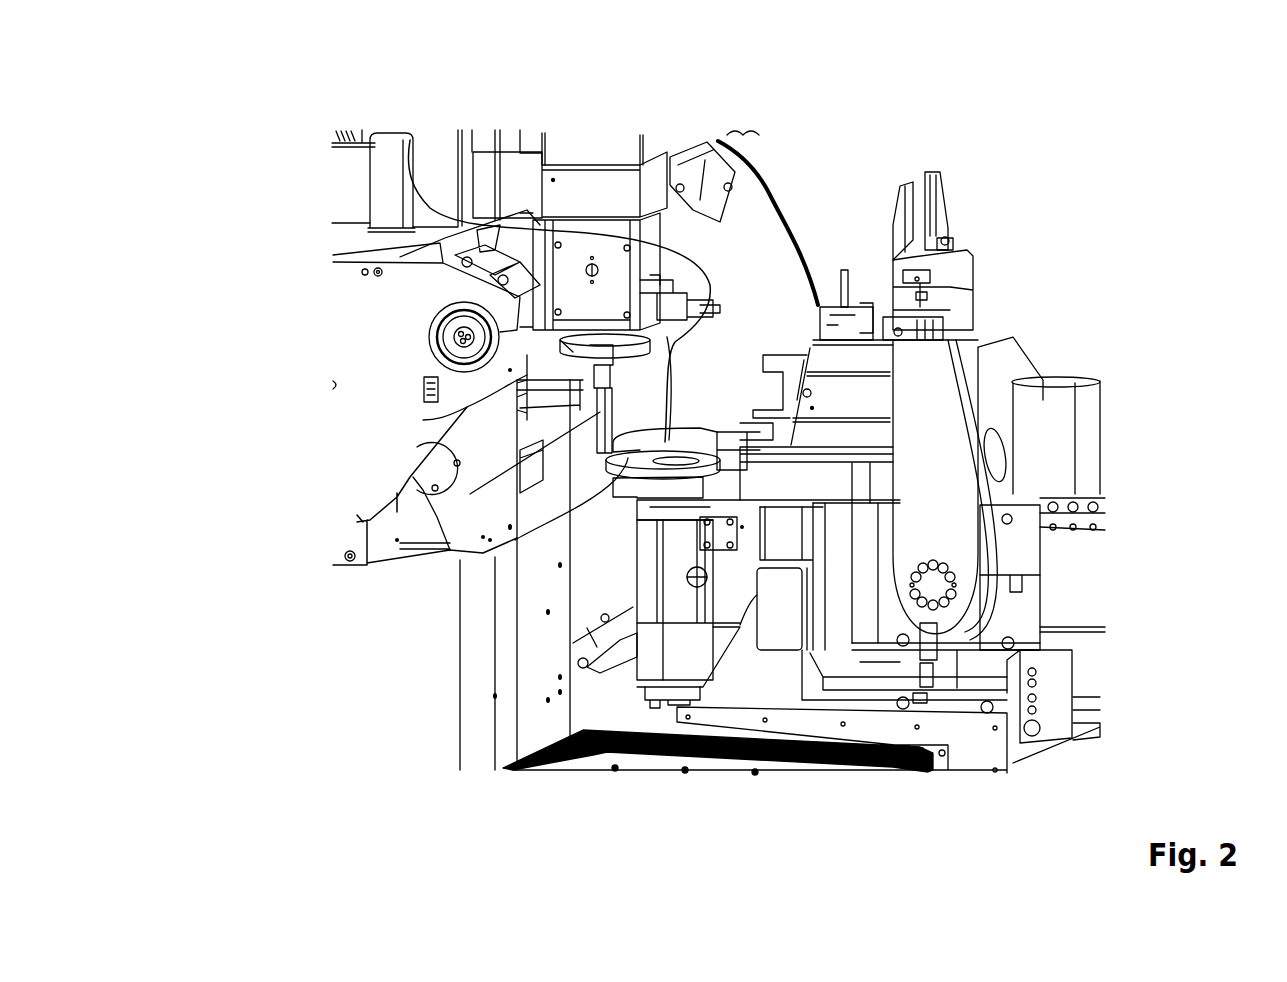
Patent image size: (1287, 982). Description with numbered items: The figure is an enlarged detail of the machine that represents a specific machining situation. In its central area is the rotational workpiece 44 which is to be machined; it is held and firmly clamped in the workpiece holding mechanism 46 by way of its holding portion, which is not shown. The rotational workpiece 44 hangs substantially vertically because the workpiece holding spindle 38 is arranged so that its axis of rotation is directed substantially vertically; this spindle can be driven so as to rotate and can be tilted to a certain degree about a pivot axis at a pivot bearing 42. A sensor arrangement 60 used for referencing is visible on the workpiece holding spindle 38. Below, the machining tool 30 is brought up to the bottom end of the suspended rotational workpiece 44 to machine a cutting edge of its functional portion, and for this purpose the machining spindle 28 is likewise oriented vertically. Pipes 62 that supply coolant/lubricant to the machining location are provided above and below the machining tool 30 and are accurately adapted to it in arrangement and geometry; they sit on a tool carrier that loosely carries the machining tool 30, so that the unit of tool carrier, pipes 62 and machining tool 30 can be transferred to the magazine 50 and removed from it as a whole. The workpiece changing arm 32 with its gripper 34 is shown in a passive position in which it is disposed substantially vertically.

The machining spindle 28 is at (651, 588).
The machining tool 30 is at (630, 478).
The workpiece changing arm 32 is at (923, 397).
The gripper 34 is at (935, 197).
The workpiece holding spindle 38 is at (580, 180).
The pivot bearing 42 is at (433, 322).
The rotational workpiece 44 is at (560, 335).
The workpiece holding mechanism 46 is at (423, 420).
The magazine 50 is at (759, 168).
The sensor arrangement 60 is at (410, 140).
The pipes 62 is at (662, 440).